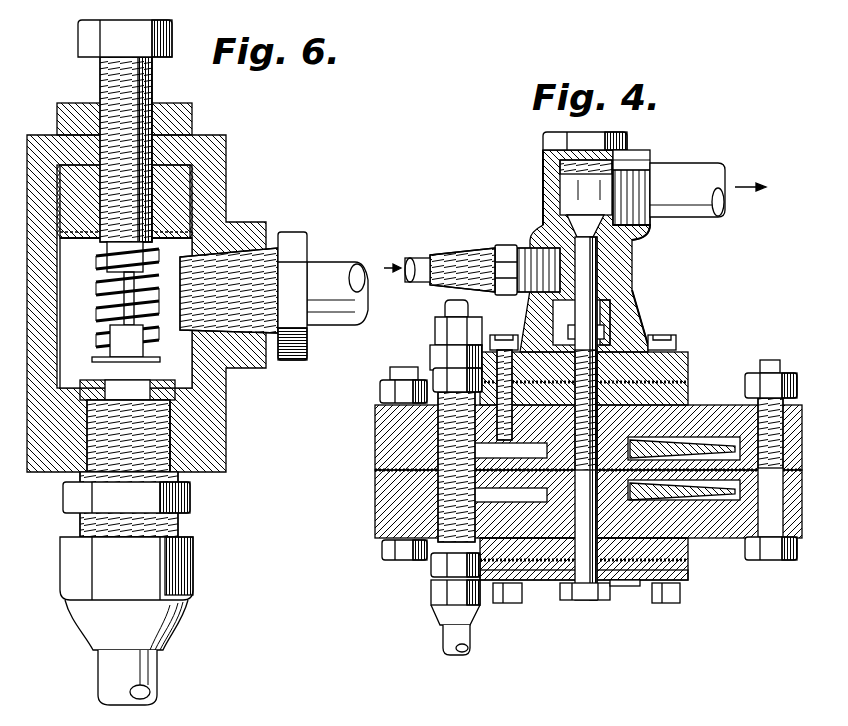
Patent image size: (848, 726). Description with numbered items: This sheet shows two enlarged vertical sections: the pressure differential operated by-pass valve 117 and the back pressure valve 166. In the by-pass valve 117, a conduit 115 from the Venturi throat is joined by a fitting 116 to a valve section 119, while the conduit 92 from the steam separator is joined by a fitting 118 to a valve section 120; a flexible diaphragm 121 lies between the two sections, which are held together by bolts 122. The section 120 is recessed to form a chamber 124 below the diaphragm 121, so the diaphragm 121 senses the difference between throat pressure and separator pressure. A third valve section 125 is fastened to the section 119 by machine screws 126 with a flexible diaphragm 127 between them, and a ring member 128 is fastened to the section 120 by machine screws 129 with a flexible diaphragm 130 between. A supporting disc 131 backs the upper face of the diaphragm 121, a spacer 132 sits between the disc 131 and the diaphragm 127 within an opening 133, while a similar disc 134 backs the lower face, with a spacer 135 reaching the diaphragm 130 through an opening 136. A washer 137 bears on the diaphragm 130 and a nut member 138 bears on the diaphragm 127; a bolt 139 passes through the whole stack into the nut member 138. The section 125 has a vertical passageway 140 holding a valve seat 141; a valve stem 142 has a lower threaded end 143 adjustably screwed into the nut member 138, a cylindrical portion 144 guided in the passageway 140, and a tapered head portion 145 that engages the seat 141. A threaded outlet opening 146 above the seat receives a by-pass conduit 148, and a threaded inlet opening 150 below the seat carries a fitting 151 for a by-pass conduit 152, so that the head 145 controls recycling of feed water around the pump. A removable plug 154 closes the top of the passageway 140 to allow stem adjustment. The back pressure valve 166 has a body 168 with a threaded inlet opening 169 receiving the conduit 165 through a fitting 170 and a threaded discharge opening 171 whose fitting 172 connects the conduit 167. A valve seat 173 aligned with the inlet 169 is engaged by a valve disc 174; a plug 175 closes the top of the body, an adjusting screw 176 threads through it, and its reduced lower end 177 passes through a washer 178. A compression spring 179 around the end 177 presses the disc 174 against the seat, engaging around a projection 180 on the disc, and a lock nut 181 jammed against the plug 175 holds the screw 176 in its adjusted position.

In FIG. 4, the conduit 92 is at (443, 638).
In FIG. 4, the conduit 115 is at (445, 314).
In FIG. 4, the fitting 116 is at (433, 378).
In FIG. 4, the pressure differential operated by-pass valve 117 is at (536, 181).
In FIG. 4, the fitting 118 is at (433, 562).
In FIG. 4, the valve section 119 is at (375, 445).
In FIG. 4, the valve section 120 is at (375, 522).
In FIG. 4, the flexible diaphragm 121 is at (375, 472).
In FIG. 4, the bolts 122 is at (785, 356).
In FIG. 4, the chamber 124 is at (700, 497).
In FIG. 4, the third valve section 125 is at (655, 332).
In FIG. 4, the machine screws 126 is at (505, 340).
In FIG. 4, the flexible diaphragm 127 is at (688, 386).
In FIG. 4, the ring member 128 is at (704, 594).
In FIG. 4, the machine screws 129 is at (510, 605).
In FIG. 4, the flexible diaphragm 130 is at (690, 565).
In FIG. 4, the supporting disc 131 is at (685, 456).
In FIG. 4, the spacer 132 is at (630, 452).
In FIG. 4, the opening 133 is at (688, 395).
In FIG. 4, the diaphragm supporting disc 134 is at (480, 494).
In FIG. 4, the spacer 135 is at (630, 494).
In FIG. 4, the opening 136 is at (690, 548).
In FIG. 4, the washer 137 is at (618, 588).
In FIG. 4, the nut member 138 is at (632, 312).
In FIG. 4, the bolt 139 is at (578, 600).
In FIG. 4, the vertical passageway 140 is at (560, 196).
In FIG. 4, the valve seat 141 is at (632, 242).
In FIG. 4, the valve stem 142 is at (600, 262).
In FIG. 4, the lower threaded end 143 is at (553, 318).
In FIG. 4, the cylindrical portion 144 is at (598, 287).
In FIG. 4, the tapered head portion 145 is at (648, 229).
In FIG. 4, the threaded outlet opening 146 is at (635, 164).
In FIG. 4, the by-pass conduit 148 is at (712, 165).
In FIG. 4, the threaded inlet opening 150 is at (527, 248).
In FIG. 4, the fitting 151 is at (500, 246).
In FIG. 4, the by-pass conduit 152 is at (416, 255).
In FIG. 4, the plug 154 is at (543, 141).
In FIG. 6, the conduit 165 is at (160, 680).
In FIG. 6, the back pressure valve 166 is at (244, 187).
In FIG. 6, the conduit 167 is at (350, 262).
In FIG. 6, the body 168 is at (175, 425).
In FIG. 6, the threaded inlet opening 169 is at (172, 432).
In FIG. 6, the fitting 170 is at (192, 493).
In FIG. 6, the threaded discharge opening 171 is at (222, 248).
In FIG. 6, the fitting 172 is at (295, 232).
In FIG. 6, the valve seat 173 is at (226, 391).
In FIG. 6, the valve disc 174 is at (160, 362).
In FIG. 6, the plug 175 is at (185, 184).
In FIG. 6, the adjusting screw 176 is at (152, 95).
In FIG. 6, the lower end of reduced diameter 177 is at (158, 280).
In FIG. 6, the washer 178 is at (147, 258).
In FIG. 6, the compression spring 179 is at (158, 302).
In FIG. 6, the projection 180 is at (145, 340).
In FIG. 6, the lock nut 181 is at (192, 110).